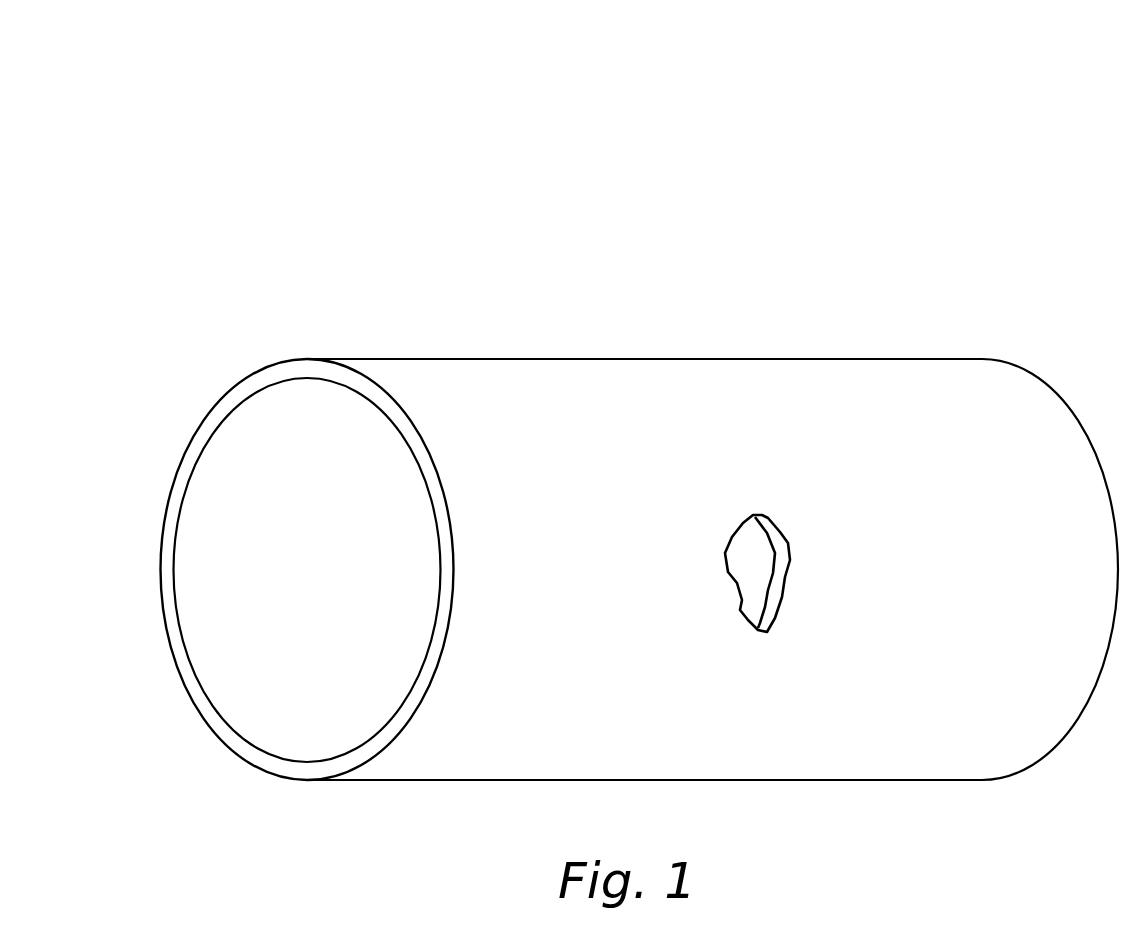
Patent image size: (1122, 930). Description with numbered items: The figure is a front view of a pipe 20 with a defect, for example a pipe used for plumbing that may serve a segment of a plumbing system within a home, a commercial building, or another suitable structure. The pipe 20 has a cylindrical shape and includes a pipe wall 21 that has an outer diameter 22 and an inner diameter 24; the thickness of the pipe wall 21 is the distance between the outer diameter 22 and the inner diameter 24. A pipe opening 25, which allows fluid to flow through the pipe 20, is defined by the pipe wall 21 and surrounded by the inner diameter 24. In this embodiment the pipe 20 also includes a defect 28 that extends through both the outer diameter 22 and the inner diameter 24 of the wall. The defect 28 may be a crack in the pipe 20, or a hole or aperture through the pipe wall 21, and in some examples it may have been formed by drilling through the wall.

The pipe 20 is at (616, 449).
The pipe wall 21 is at (835, 695).
The outer diameter 22 is at (402, 358).
The inner diameter 24 is at (223, 722).
The pipe opening 25 is at (262, 481).
The defect 28 is at (758, 558).